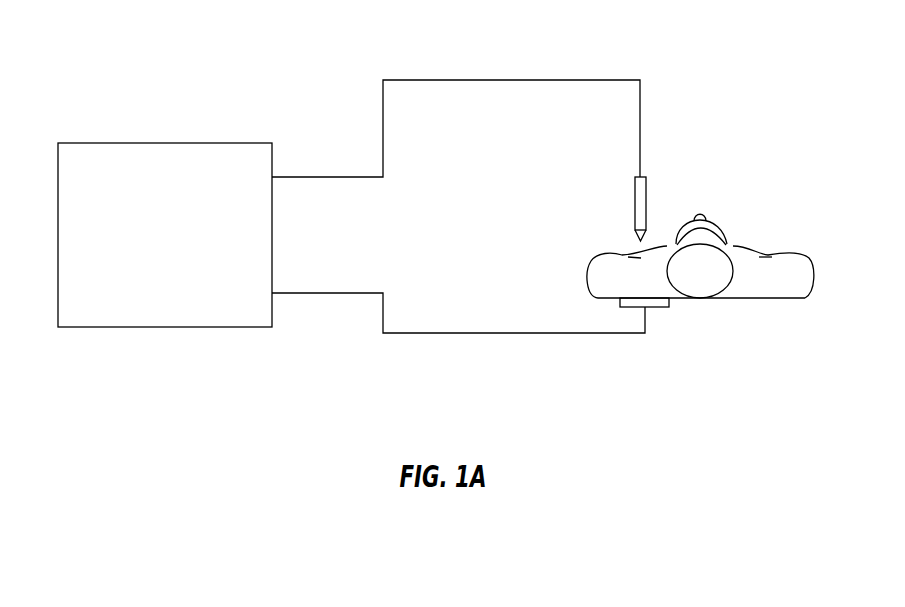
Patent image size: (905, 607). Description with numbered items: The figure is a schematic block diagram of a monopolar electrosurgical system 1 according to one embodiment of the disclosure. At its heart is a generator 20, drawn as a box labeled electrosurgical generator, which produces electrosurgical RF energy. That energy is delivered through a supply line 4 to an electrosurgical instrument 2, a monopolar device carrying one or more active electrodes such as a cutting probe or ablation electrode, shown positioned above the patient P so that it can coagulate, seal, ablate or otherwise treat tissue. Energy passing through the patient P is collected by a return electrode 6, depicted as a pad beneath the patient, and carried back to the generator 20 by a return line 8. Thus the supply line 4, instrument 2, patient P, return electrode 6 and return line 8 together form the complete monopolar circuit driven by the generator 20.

The monopolar electrosurgical system 1 is at (259, 48).
The generator 20 is at (90, 143).
The supply line 4 is at (513, 80).
The return line 8 is at (530, 333).
The electrosurgical instrument 2 is at (633, 205).
The return electrode 6 is at (658, 308).
The patient P is at (779, 240).